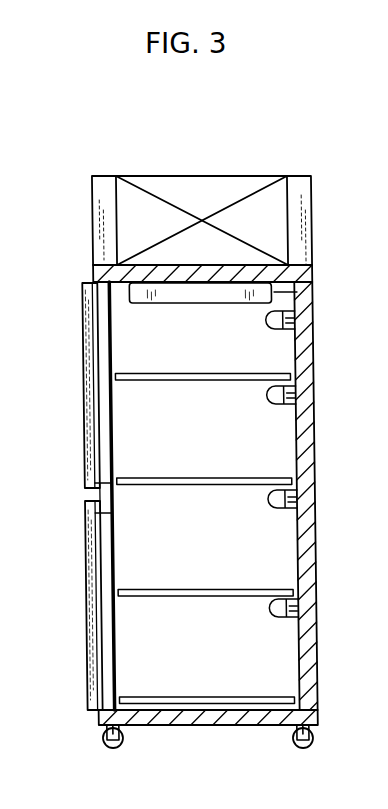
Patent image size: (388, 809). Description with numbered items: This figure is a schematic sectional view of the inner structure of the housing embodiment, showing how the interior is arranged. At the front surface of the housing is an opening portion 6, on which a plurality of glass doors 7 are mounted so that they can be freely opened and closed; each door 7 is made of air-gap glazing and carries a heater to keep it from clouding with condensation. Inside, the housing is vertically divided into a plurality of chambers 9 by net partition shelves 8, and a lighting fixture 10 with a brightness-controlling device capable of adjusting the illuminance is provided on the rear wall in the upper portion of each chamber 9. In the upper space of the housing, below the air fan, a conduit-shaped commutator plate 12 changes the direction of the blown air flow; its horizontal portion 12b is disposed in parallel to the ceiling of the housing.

The opening portion 6 is at (100, 361).
The glass door 7 is at (87, 448).
The net partition shelf 8 is at (245, 381).
The chamber 9 is at (200, 490).
The lighting fixture 10 is at (314, 393).
The commutator plate 12 is at (281, 292).
The horizontal portion 12b is at (147, 303).